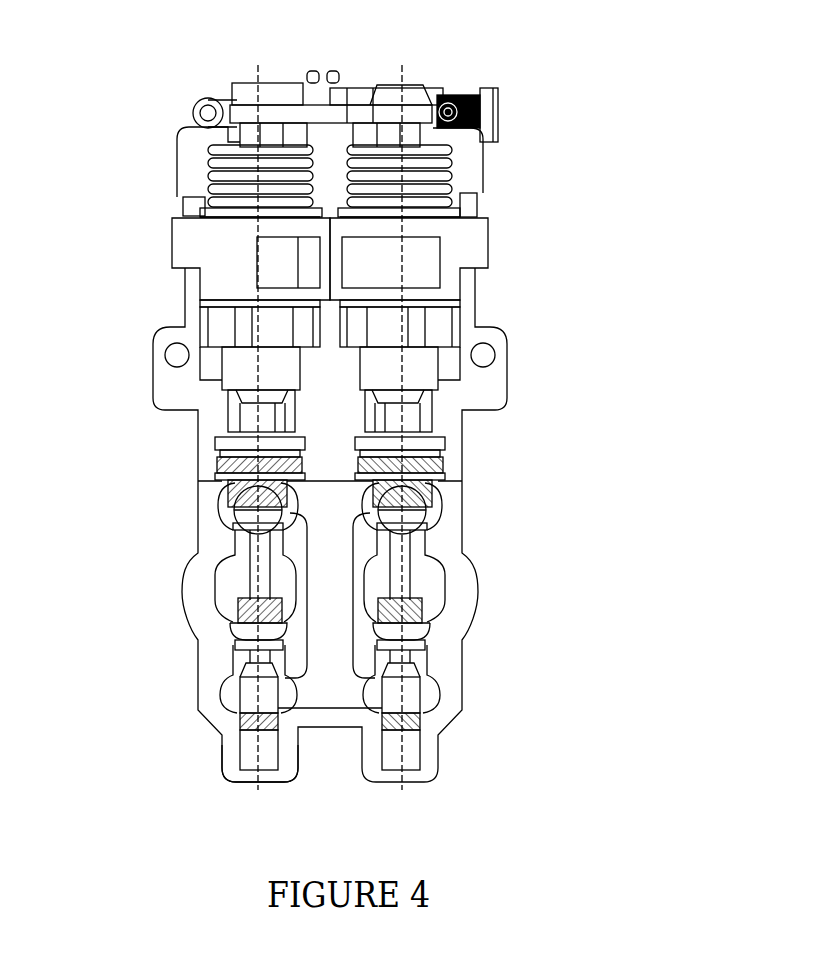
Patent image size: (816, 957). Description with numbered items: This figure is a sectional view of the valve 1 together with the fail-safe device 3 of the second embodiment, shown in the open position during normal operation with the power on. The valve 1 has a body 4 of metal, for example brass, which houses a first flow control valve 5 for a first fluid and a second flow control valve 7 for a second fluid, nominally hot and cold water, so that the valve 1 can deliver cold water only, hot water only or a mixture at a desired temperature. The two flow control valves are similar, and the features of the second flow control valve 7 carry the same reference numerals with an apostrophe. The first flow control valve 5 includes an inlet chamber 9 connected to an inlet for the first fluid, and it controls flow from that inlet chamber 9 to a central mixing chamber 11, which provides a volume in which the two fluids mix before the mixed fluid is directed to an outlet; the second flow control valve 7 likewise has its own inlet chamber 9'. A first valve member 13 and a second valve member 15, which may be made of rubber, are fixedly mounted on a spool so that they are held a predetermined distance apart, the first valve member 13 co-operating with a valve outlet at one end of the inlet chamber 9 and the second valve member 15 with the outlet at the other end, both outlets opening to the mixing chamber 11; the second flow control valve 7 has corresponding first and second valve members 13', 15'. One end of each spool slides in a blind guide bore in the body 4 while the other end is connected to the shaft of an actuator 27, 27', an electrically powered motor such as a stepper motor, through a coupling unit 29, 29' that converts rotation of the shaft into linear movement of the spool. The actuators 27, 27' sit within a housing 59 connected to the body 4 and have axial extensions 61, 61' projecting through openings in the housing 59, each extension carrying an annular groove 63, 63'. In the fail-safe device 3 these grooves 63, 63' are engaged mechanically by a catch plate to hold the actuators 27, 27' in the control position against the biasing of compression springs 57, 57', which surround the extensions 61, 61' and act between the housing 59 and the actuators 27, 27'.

The valve 1 is at (518, 520).
The fail-safe device 3 is at (540, 165).
The body 4 is at (218, 718).
The first flow control valve 5 is at (218, 657).
The second flow control valve 7 is at (448, 638).
The inlet chamber 9 is at (201, 598).
The inlet chamber 9' is at (455, 598).
The mixing chamber 11 is at (330, 687).
The first valve member 13 is at (187, 507).
The first valve member 13' is at (483, 499).
The second valve member 15 is at (186, 684).
The second valve member 15' is at (488, 683).
The actuator 27 is at (195, 259).
The actuator 27' is at (475, 259).
The coupling unit 29 is at (172, 413).
The coupling unit 29' is at (489, 413).
The compression spring 57 is at (198, 179).
The compression spring 57' is at (474, 154).
The housing 59 is at (180, 137).
The axial extension 61 is at (233, 83).
The axial extension 61' is at (456, 79).
The annular groove 63 is at (288, 110).
The annular groove 63' is at (435, 111).